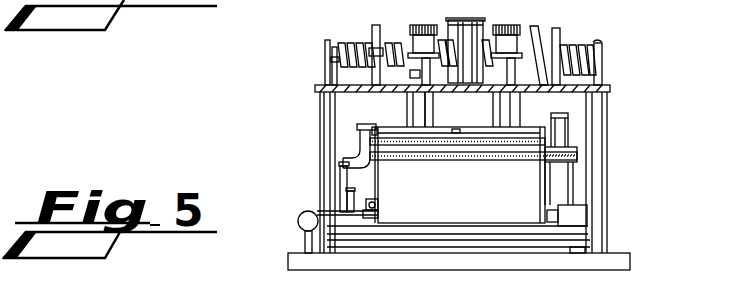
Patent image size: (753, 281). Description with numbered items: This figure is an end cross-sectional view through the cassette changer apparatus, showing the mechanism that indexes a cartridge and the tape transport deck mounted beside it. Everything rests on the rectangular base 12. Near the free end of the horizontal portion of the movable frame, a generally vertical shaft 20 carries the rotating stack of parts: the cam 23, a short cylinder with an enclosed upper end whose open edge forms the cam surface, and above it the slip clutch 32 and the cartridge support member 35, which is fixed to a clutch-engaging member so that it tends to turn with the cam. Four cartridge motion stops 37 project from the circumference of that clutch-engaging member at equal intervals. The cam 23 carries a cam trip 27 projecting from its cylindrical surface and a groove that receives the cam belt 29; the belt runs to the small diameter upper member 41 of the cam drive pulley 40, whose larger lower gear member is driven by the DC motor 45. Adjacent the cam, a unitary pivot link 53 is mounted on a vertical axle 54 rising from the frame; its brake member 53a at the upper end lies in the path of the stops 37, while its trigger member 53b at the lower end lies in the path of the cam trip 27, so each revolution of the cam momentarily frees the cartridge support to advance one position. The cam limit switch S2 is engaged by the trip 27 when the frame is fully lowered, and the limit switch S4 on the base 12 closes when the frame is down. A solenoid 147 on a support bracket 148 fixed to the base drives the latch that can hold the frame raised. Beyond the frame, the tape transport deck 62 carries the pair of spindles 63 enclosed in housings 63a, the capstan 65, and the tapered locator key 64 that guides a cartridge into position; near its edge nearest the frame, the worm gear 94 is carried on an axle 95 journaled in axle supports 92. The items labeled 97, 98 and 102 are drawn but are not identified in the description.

The base 12 is at (288, 250).
The vertical shaft 20 is at (471, 30).
The cam 23 is at (481, 213).
The cam trip 27 is at (384, 209).
The cam belt 29 is at (525, 161).
The clutch 32 is at (426, 135).
The cartridge support member 35 is at (473, 114).
The cartridge motion stops 37 is at (365, 126).
The cam drive pulley 40 is at (578, 177).
The upper member 41 is at (565, 150).
The DC motor 45 is at (525, 108).
The pivot link 53 is at (368, 155).
The brake member 53a is at (360, 143).
The trigger member 53b is at (378, 213).
The vertical axle 54 is at (348, 175).
The tape transport deck 62 is at (318, 84).
The spindles 63 is at (421, 26).
The housings 63a is at (415, 92).
The tapered locator key 64 is at (551, 40).
The capstan 65 is at (460, 20).
The axle supports 92 is at (600, 68).
The worm gear 94 is at (592, 43).
The axle 95 is at (598, 42).
The rod 97 is at (328, 68).
The rod 98 is at (322, 73).
The nut 102 is at (335, 55).
The solenoid 147 is at (300, 213).
The support bracket 148 is at (305, 240).
The cam limit switch S2 is at (578, 218).
The limit switch S4 is at (586, 250).